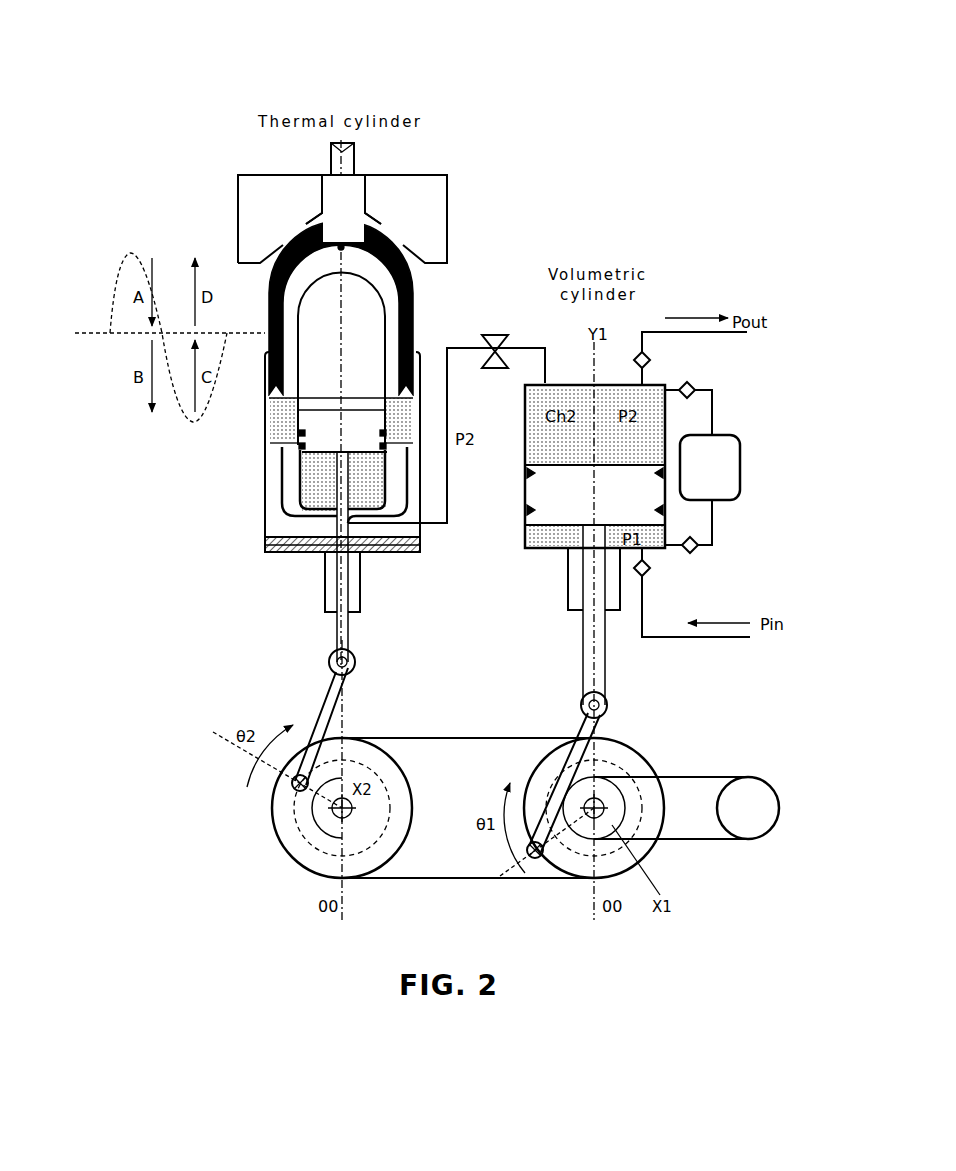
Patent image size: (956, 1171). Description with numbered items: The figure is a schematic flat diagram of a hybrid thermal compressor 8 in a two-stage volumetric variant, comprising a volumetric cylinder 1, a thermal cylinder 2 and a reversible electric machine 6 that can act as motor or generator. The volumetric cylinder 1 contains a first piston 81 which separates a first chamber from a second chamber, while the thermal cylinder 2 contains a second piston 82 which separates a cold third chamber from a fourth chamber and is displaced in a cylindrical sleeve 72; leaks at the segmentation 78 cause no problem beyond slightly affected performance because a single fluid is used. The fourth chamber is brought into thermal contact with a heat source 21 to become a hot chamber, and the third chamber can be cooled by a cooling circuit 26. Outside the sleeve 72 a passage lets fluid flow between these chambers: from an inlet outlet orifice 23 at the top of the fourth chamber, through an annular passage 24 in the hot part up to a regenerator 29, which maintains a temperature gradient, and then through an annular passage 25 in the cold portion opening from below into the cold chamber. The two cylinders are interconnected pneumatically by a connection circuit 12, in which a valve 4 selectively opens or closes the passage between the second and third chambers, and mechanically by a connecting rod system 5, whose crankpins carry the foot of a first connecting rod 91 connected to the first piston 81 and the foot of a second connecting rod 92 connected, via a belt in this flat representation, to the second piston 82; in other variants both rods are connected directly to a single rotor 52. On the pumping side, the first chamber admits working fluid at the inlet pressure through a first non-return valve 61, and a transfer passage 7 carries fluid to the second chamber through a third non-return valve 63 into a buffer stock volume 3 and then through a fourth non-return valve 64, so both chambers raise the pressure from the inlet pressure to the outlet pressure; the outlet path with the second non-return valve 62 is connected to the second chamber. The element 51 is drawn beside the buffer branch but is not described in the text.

The volumetric cylinder 1 is at (514, 563).
The thermal cylinder 2 is at (410, 87).
The buffer stock volume 3 is at (710, 467).
The valve 4 is at (497, 318).
The connecting rod system 5 is at (468, 727).
The reversible electric machine 6 is at (762, 770).
The transfer passage 7 is at (788, 383).
The hybrid thermal compressor 8 is at (660, 157).
The connection circuit 12 is at (460, 348).
The heat source 21 is at (338, 167).
The inlet outlet orifice 23 is at (330, 248).
The annular passage 24 is at (412, 293).
The annular passage 25 is at (283, 515).
The cooling circuit 26 is at (277, 548).
The regenerator 29 is at (283, 433).
The inlet line 51 is at (712, 512).
The single rotor 52 is at (712, 420).
The first non-return valve 61 is at (692, 592).
The second non-return valve 62 is at (679, 358).
The third non-return valve 63 is at (688, 538).
The fourth non-return valve 64 is at (688, 399).
The cylindrical sleeve 72 is at (300, 462).
The segmentation 78 is at (528, 510).
The first piston 81 is at (595, 491).
The second piston 82 is at (342, 404).
The first connecting rod 91 is at (580, 720).
The second connecting rod 92 is at (322, 656).